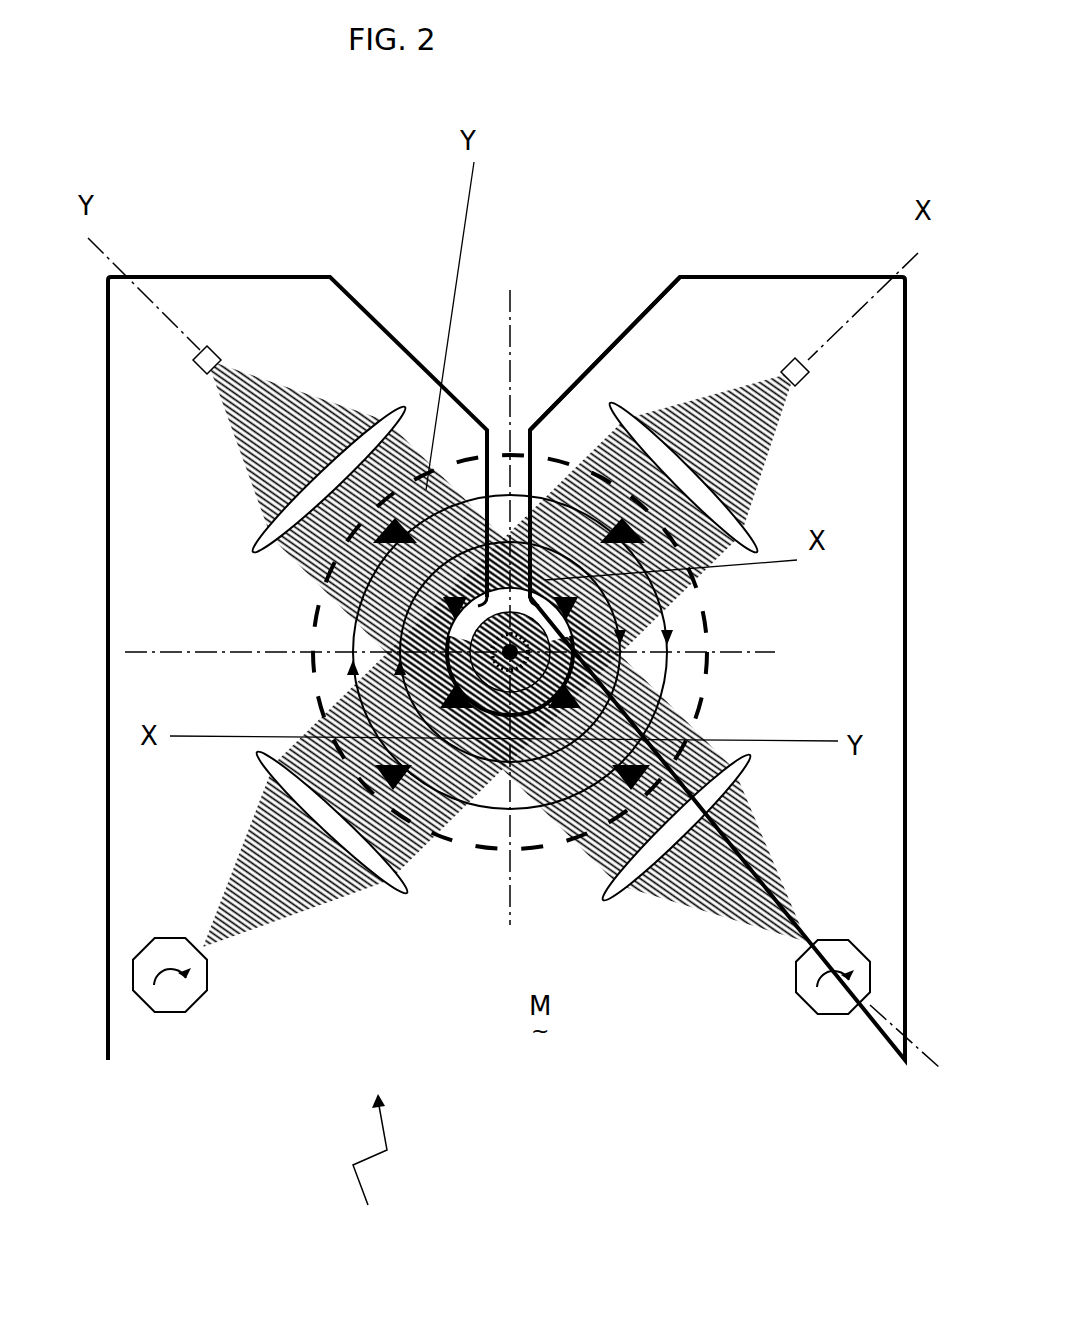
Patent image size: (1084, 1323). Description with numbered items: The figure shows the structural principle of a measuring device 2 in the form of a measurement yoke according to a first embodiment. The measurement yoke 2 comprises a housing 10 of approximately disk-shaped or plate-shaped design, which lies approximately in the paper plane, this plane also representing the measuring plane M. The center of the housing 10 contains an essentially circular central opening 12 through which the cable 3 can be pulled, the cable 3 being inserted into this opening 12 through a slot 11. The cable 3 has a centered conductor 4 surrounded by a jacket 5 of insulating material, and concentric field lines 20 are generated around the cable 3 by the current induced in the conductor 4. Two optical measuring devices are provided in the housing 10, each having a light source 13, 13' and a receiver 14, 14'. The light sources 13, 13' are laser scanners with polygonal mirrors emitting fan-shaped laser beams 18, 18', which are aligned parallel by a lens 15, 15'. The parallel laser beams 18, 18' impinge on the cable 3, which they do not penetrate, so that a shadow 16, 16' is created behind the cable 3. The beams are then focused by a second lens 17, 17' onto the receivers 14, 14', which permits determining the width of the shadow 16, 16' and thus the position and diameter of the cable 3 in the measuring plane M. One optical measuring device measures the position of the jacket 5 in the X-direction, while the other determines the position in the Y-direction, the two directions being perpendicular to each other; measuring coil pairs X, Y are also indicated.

The measuring device 2 is at (370, 1166).
The cable 3 is at (570, 633).
The centered conductor 4 is at (340, 601).
The jacket 5 is at (365, 675).
The housing 10 is at (215, 300).
The slot 11 is at (536, 430).
The central opening 12 is at (665, 690).
The light source 13 is at (234, 975).
The light source 13' is at (771, 975).
The receiver 14 is at (826, 278).
The receiver 14' is at (174, 257).
The lens 15 is at (331, 958).
The lens 15' is at (676, 959).
The shadow 16 is at (713, 355).
The shadow 16' is at (328, 352).
The second lens 17 is at (534, 492).
The second lens 17' is at (470, 539).
The laser beam 18 is at (360, 964).
The laser beam 18' is at (743, 855).
The field lines 20 is at (490, 483).